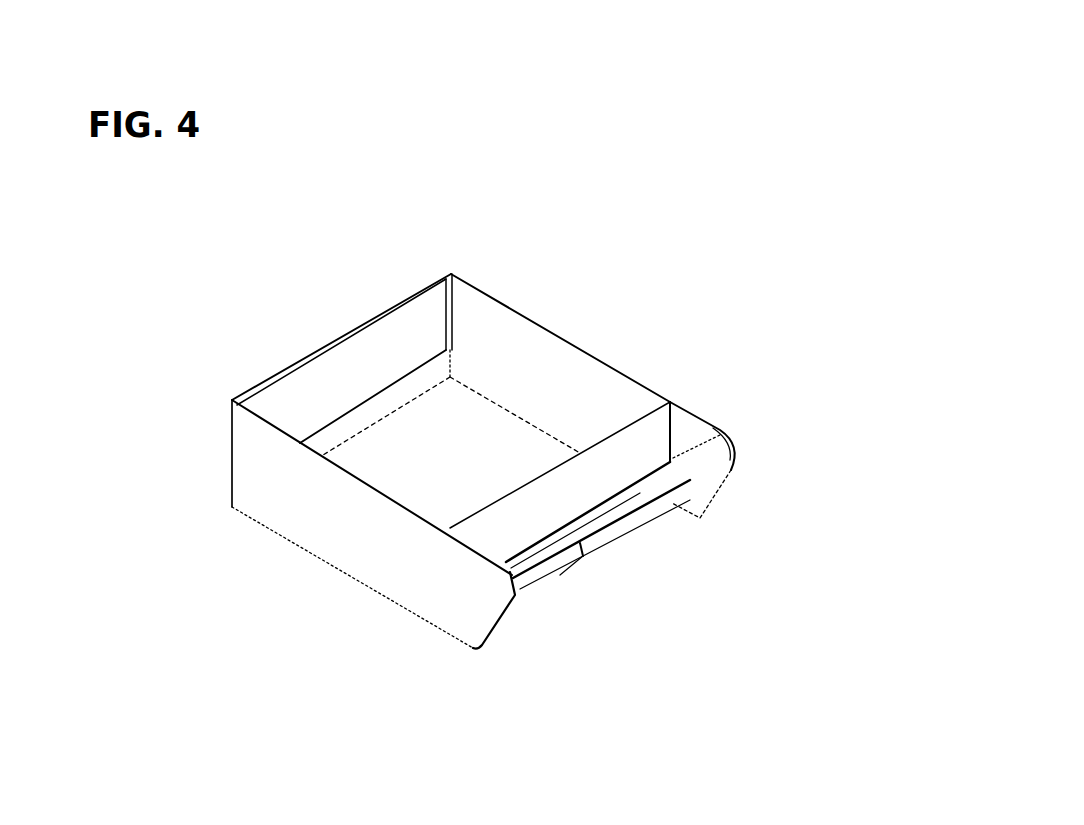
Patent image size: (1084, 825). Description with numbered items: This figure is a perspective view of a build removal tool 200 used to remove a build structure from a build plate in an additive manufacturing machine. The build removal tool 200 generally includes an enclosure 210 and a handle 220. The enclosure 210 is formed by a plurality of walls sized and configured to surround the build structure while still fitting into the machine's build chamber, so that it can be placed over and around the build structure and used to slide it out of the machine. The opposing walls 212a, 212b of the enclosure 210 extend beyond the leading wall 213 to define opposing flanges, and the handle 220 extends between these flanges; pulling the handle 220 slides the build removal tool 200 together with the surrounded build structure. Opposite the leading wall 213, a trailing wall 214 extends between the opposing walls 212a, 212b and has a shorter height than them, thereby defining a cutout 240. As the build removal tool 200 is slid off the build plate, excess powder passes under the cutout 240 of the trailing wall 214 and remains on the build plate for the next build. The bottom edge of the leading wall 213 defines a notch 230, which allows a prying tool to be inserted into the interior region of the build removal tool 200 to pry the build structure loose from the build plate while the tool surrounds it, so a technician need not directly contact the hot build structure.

The build removal tool 200 is at (172, 231).
The enclosure 210 is at (643, 345).
The opposing wall 212a is at (567, 363).
The opposing wall 212b is at (290, 497).
The leading wall 213 is at (587, 475).
The trailing wall 214 is at (412, 338).
The handle 220 is at (700, 460).
The notch 230 is at (565, 558).
The cutout 240 is at (360, 417).